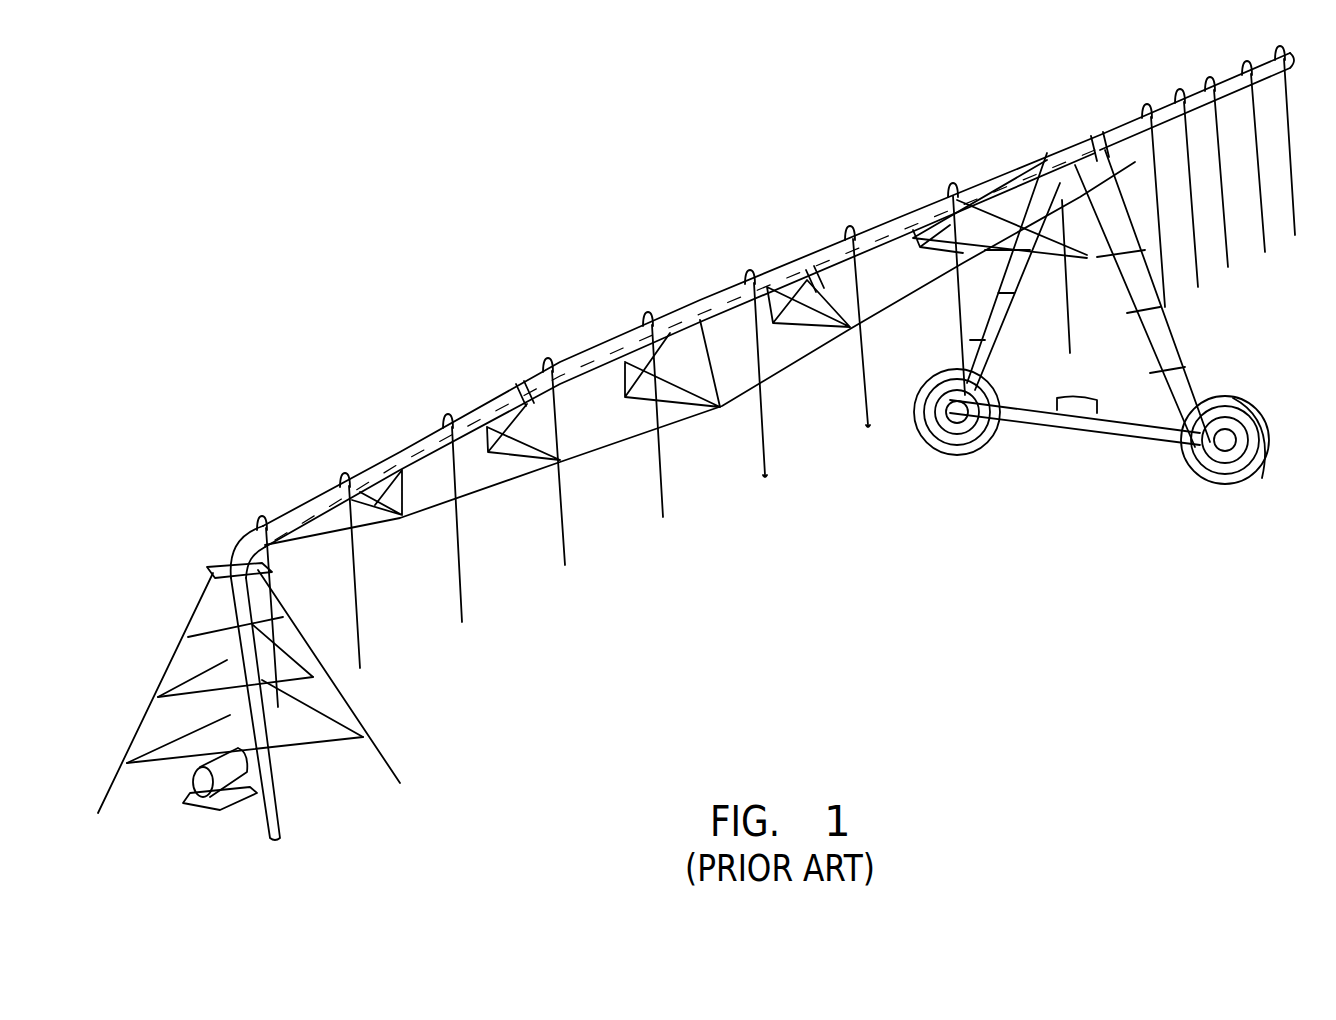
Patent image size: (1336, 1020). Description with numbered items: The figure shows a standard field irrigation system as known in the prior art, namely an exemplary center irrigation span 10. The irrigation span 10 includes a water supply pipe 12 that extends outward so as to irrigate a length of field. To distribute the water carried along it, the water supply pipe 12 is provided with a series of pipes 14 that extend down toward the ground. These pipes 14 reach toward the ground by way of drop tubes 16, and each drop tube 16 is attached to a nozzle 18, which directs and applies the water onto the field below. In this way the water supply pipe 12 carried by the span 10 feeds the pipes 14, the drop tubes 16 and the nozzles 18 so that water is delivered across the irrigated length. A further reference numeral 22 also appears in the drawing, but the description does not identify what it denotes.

The center irrigation span 10 is at (696, 443).
The water supply pipe 12 is at (597, 350).
The pipes 14 is at (847, 230).
The drop tubes 16 is at (860, 370).
The nozzle 18 is at (886, 349).
The sprinkler drop 22 is at (807, 397).